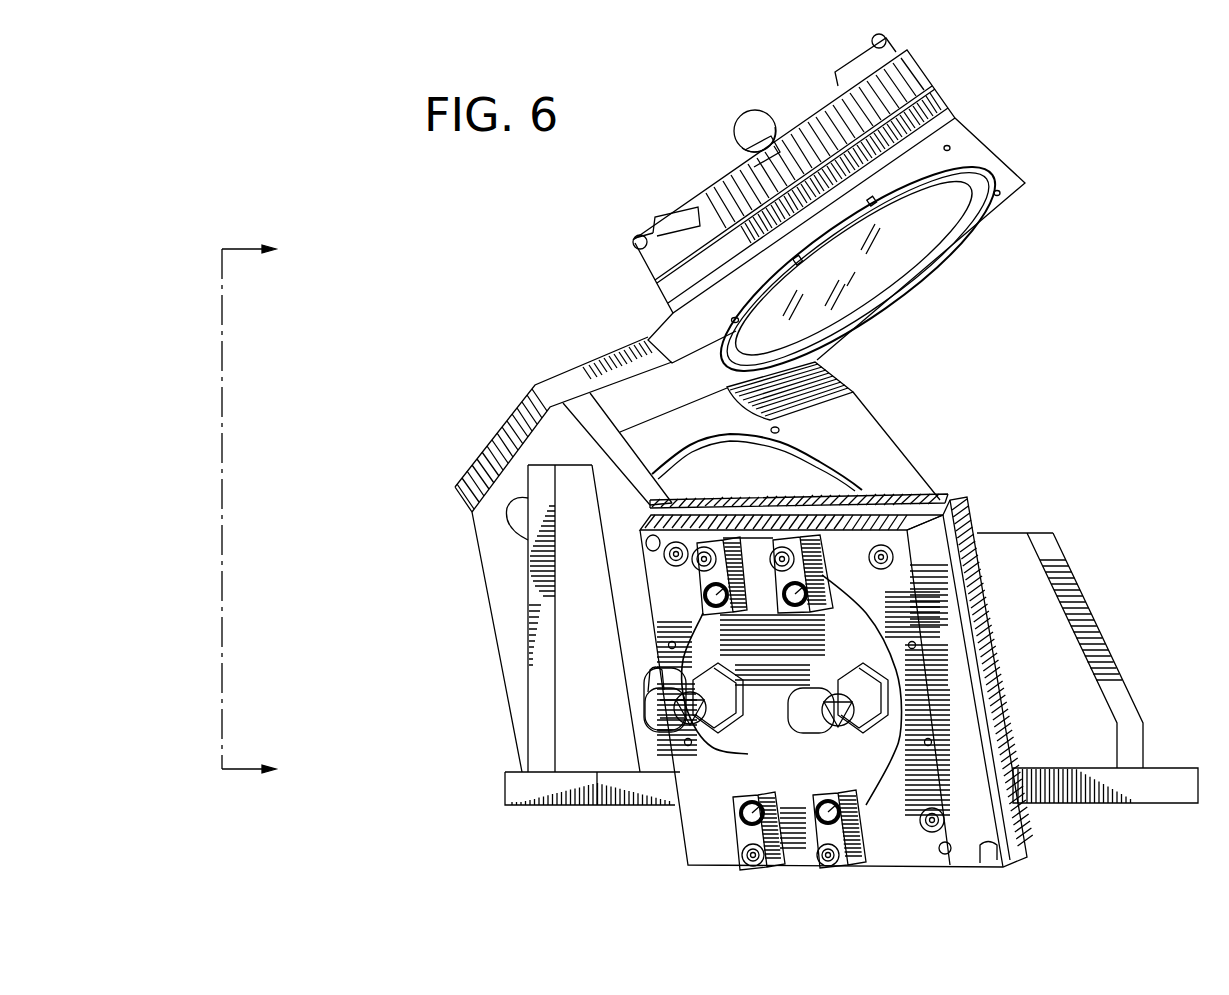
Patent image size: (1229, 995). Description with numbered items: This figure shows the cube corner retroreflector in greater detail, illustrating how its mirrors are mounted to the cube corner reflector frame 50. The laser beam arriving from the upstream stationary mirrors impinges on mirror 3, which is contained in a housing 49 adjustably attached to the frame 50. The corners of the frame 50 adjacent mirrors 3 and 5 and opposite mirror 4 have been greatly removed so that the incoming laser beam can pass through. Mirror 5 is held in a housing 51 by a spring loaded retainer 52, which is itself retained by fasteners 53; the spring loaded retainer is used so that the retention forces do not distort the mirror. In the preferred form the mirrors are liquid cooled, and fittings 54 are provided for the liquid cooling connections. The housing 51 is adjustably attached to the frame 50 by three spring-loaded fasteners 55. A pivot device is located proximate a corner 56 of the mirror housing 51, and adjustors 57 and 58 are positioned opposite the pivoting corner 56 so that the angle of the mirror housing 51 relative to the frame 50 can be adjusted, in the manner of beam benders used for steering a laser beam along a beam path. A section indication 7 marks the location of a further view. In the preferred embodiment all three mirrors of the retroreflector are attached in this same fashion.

The mirror 3 is at (929, 232).
The mirror 4 is at (697, 470).
The mirror 5 is at (867, 647).
The section line 7- 7 is at (264, 509).
The housing 49 is at (913, 64).
The cube corner reflector frame 50 is at (520, 410).
The housing 51 is at (935, 688).
The spring loaded retainer 52 is at (808, 769).
The fasteners 53 is at (831, 870).
The fittings 54 is at (656, 717).
The spring-loaded fasteners 55 is at (945, 823).
The corner 56 is at (918, 522).
The adjustor 57 is at (945, 855).
The adjustor 58 is at (647, 545).